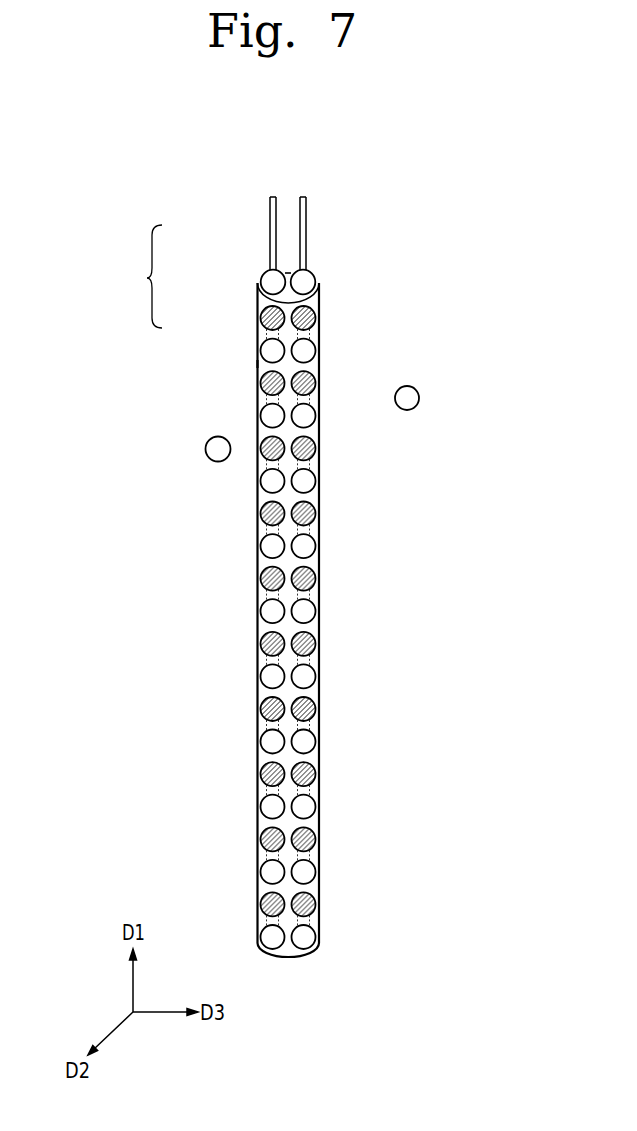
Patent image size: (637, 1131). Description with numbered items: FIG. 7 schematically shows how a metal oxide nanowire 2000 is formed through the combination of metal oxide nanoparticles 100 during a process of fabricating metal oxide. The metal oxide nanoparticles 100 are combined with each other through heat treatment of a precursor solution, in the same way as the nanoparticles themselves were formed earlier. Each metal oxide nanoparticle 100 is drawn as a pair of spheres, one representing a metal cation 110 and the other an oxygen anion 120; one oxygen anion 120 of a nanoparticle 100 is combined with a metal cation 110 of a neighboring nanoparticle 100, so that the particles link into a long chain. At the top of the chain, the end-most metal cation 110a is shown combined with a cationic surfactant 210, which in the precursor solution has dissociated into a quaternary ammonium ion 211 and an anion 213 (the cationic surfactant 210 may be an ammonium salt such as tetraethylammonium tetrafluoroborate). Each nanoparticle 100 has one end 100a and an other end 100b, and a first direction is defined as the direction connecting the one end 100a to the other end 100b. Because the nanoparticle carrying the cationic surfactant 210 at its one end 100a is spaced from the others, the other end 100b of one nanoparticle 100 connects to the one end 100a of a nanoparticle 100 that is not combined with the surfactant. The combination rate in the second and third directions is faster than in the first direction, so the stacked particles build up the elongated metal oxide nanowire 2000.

The metal oxide nanowire 2000 is at (308, 964).
The metal oxide nanoparticle 100 is at (419, 282).
The metal cation 110 is at (318, 318).
The oxygen anion 120 is at (318, 348).
The end light emitting element 110a is at (318, 289).
The one end of the metal oxide nanoparticle 100a is at (318, 364).
The other end of the metal oxide nanoparticle 100b is at (317, 364).
The cationic surfactant 210 is at (135, 276).
The quaternary ammonium ion 211 is at (218, 437).
The anion 213 is at (270, 229).